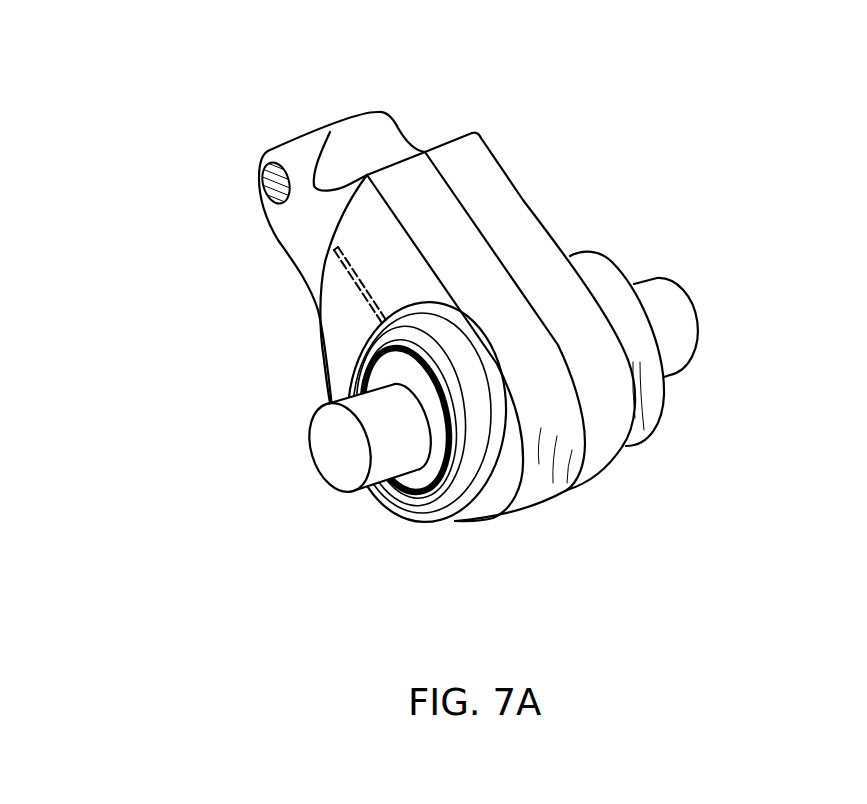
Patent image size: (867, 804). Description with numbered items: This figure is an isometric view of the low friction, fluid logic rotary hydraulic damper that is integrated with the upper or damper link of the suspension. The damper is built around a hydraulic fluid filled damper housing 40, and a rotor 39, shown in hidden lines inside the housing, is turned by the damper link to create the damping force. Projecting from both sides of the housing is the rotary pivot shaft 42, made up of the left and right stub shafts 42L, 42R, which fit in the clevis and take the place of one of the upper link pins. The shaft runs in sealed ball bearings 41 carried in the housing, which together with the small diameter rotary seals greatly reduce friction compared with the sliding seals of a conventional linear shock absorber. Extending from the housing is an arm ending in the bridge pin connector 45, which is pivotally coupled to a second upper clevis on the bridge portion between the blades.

The rotor 39 is at (360, 273).
The damper housing 40 is at (522, 233).
The sealed ball bearings 41 is at (368, 351).
The rotary pivot shaft 42 is at (485, 311).
The left stub shaft 42L is at (338, 467).
The right stub shaft 42R is at (700, 323).
The bridge pin connector 45 is at (268, 178).